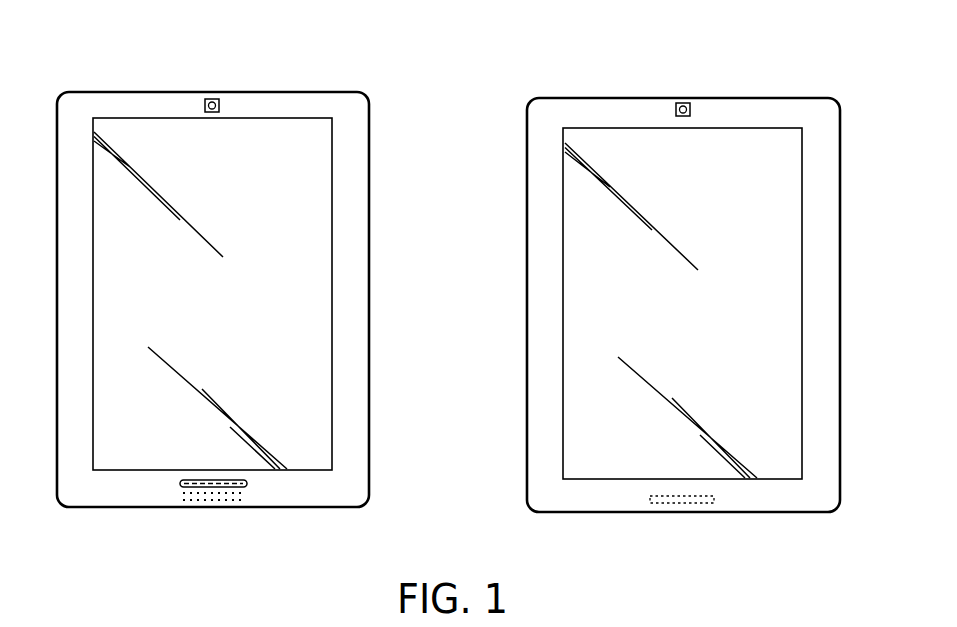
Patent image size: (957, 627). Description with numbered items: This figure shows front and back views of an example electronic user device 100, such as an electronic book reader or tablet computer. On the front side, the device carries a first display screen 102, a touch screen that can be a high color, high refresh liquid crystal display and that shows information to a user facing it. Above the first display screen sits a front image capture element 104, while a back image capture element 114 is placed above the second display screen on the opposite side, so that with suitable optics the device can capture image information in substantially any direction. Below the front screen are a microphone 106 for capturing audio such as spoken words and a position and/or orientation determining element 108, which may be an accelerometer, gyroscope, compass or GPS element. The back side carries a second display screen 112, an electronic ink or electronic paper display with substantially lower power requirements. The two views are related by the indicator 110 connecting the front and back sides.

The electronic user device 100 is at (828, 75).
The first display screen 102 is at (332, 230).
The front image capture element 104 is at (219, 105).
The microphone 106 is at (178, 483).
The position and/or orientation determining element 108 is at (245, 493).
The housing 110 is at (550, 380).
The second display screen 112 is at (565, 238).
The back image capture element 114 is at (683, 101).